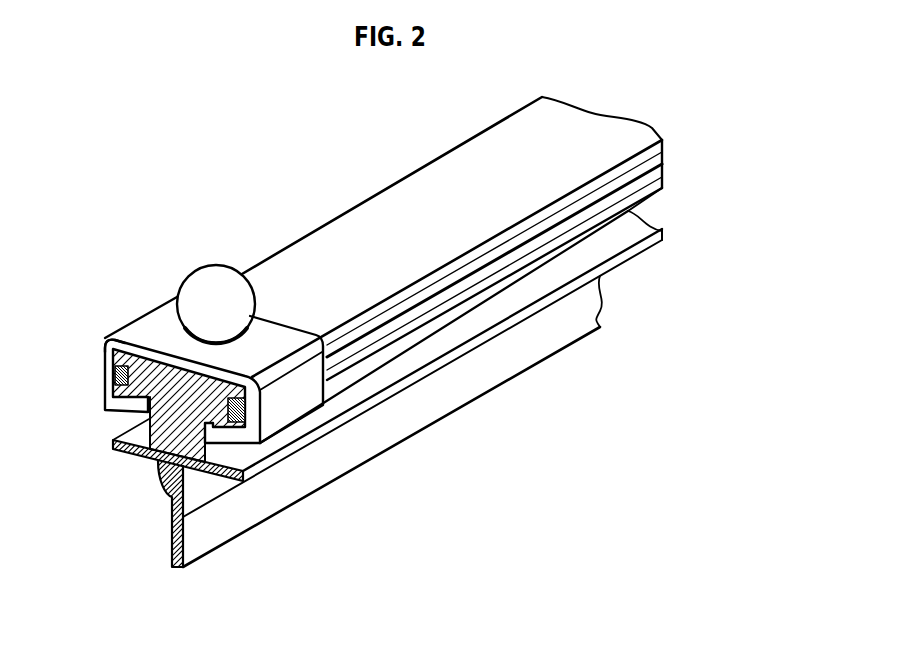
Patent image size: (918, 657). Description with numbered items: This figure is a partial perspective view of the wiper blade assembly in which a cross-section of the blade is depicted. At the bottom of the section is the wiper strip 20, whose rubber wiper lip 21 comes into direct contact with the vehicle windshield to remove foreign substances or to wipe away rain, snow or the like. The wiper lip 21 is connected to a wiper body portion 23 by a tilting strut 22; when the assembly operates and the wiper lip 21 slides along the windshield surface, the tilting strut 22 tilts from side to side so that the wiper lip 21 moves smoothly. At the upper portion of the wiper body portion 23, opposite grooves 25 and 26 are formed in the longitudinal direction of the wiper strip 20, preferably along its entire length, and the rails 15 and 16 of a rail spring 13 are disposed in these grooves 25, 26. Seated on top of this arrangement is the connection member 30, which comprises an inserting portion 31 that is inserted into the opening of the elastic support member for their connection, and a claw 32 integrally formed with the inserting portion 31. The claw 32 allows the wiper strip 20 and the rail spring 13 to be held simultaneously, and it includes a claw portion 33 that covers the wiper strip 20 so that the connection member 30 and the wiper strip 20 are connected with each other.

The rail spring 13 is at (667, 168).
The rail 15 is at (114, 373).
The rail 16 is at (613, 193).
The wiper strip 20 is at (447, 421).
The wiper lip 21 is at (240, 534).
The tilting strut 22 is at (155, 468).
The wiper body portion 23 is at (114, 446).
The groove 25 is at (110, 335).
The groove 26 is at (243, 378).
The connection member 30 is at (143, 314).
The inserting portion 31 is at (213, 270).
The claw 32 is at (297, 400).
The claw portion 33 is at (110, 410).